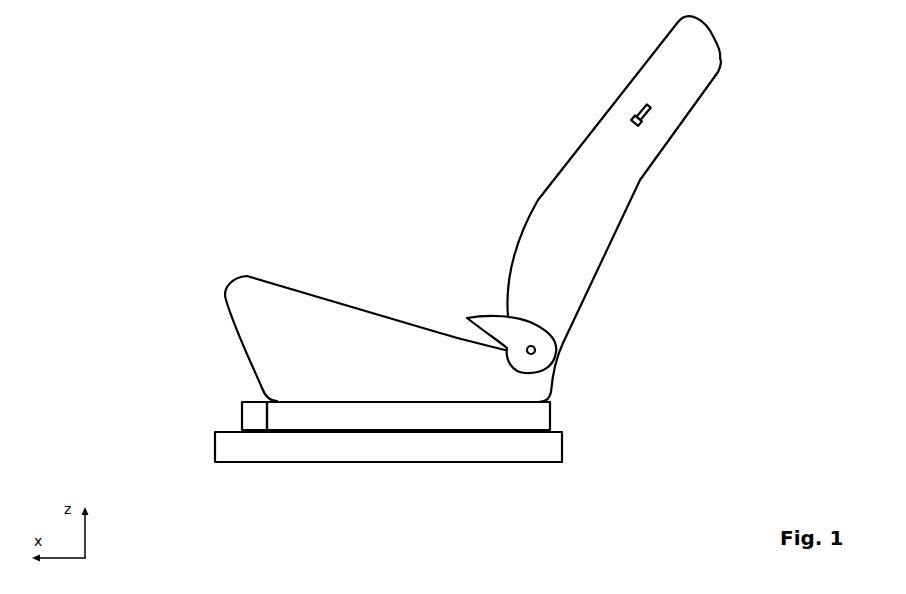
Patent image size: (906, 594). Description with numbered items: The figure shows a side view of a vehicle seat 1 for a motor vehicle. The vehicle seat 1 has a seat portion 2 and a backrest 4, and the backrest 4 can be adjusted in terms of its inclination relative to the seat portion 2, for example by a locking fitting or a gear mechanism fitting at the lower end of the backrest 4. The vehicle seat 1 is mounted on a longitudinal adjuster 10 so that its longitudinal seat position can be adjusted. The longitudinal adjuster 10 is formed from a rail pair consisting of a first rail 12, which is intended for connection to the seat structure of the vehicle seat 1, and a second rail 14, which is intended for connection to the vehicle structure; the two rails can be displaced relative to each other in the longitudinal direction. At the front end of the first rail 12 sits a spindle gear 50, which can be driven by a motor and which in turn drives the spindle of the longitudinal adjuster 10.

The vehicle seat 1 is at (342, 100).
The seat portion 2 is at (333, 332).
The backrest 4 is at (588, 170).
The longitudinal adjuster 10 is at (214, 387).
The first rail 12 is at (538, 415).
The second rail 14 is at (547, 447).
The spindle gear 50 is at (247, 417).